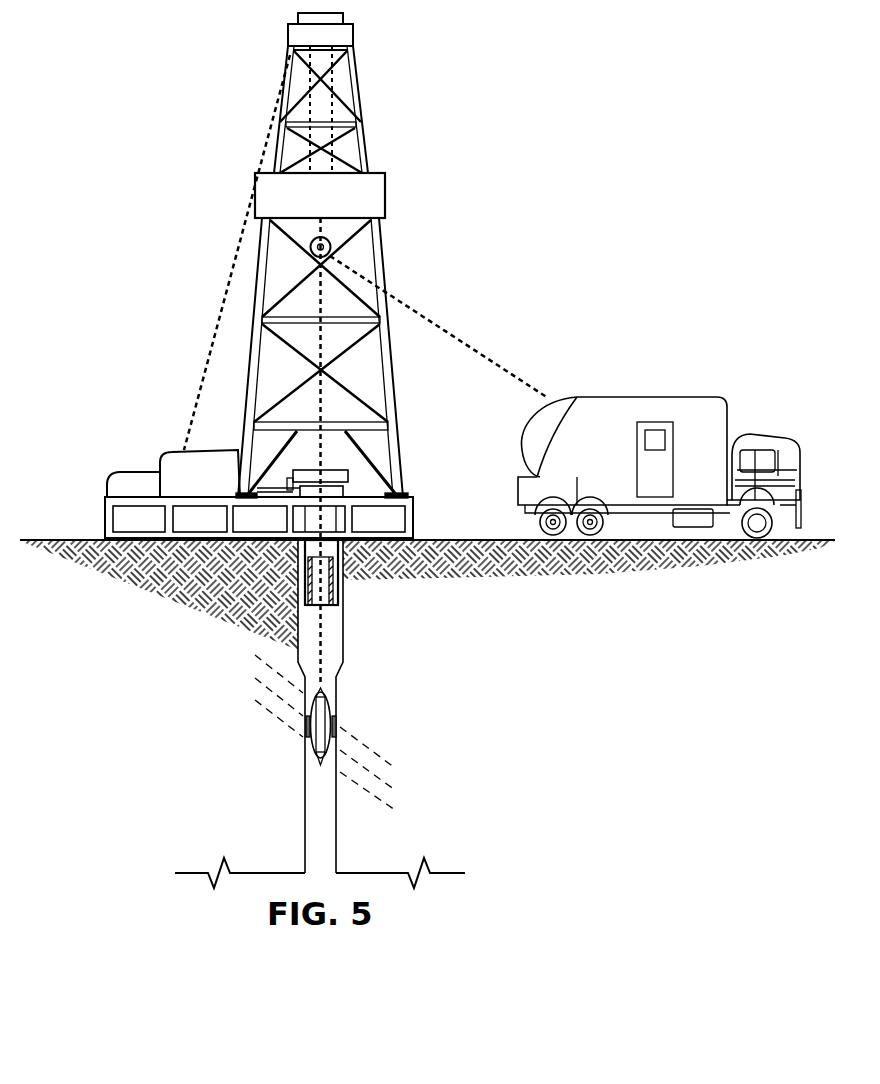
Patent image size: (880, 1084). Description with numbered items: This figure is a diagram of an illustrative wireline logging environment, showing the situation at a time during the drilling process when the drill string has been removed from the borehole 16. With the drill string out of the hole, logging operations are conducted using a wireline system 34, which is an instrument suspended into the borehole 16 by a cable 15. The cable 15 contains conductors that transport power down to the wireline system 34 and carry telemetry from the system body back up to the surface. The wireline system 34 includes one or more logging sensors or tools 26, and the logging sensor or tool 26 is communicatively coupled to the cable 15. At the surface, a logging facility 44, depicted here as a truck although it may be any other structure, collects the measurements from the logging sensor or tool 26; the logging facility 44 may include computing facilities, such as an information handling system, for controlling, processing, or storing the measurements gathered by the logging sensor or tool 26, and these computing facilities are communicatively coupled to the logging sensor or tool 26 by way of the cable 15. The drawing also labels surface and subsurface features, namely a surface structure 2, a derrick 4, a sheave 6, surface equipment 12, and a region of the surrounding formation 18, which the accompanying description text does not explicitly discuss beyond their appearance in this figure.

The drilling rig base / skid 2 is at (416, 518).
The derrick 4 is at (389, 265).
The pulley / crown sheave 6 is at (320, 237).
The hoisting equipment / drawworks 12 is at (342, 457).
The cable 15 is at (318, 588).
The borehole 16 is at (336, 645).
The fractures / formation 18 is at (396, 765).
The logging sensor or tool 26 is at (310, 726).
The wireline system 34 is at (322, 712).
The logging facility 44 is at (653, 397).